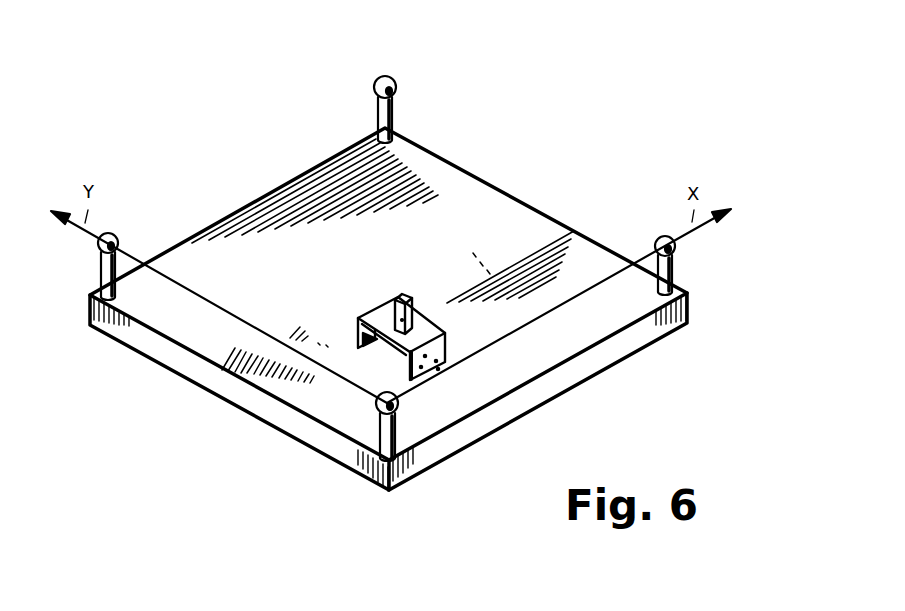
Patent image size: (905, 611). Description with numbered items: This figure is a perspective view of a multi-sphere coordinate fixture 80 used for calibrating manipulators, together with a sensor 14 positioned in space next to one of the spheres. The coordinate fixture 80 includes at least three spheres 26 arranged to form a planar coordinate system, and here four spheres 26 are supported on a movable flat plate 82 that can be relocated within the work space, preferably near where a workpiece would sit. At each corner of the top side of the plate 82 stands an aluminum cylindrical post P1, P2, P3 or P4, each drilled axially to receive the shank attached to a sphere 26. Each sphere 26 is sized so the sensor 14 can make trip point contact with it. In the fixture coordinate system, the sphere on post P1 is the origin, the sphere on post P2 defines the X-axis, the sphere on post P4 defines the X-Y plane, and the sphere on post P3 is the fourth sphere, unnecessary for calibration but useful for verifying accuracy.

The sensor 14 is at (421, 307).
The sphere 26 is at (386, 75).
The coordinate fixture 80 is at (533, 183).
The flat plate 82 is at (555, 383).
The cylindrical post P1 is at (402, 440).
The cylindrical post P2 is at (675, 277).
The cylindrical post P3 is at (396, 121).
The cylindrical post P4 is at (97, 278).